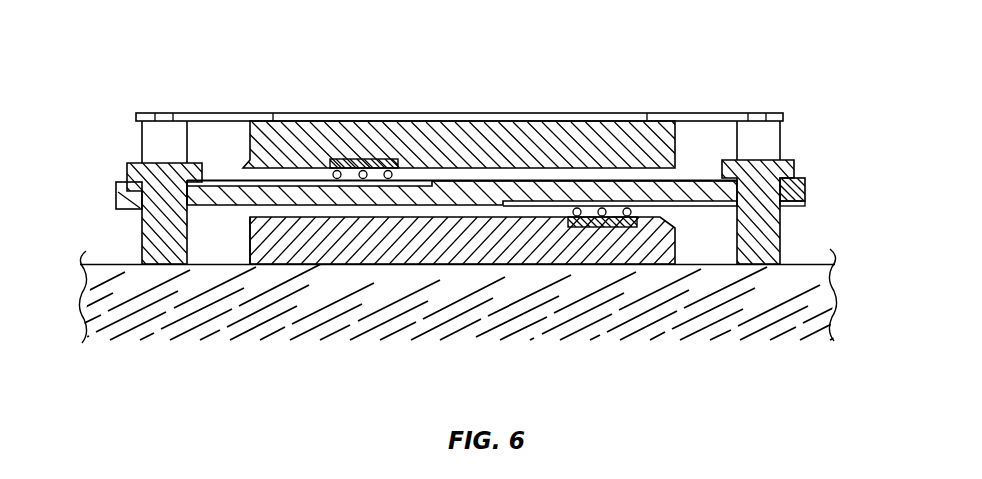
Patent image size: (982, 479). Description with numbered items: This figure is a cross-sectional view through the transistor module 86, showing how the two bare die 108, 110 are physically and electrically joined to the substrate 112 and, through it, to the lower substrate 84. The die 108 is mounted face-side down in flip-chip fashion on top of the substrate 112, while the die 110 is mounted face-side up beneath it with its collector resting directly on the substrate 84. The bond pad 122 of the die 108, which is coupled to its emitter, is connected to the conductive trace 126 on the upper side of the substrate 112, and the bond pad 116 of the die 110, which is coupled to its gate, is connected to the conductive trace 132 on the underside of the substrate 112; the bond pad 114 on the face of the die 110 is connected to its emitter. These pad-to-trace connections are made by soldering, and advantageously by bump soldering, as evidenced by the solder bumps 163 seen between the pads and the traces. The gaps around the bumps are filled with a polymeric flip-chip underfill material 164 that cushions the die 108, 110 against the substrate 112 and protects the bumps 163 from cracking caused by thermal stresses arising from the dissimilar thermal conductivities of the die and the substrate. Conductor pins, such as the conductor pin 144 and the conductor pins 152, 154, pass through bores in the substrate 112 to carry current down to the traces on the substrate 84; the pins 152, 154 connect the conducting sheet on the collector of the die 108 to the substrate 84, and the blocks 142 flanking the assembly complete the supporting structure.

The transistor module 86 is at (496, 79).
The substrate 84 is at (337, 315).
The bare die 108 is at (456, 110).
The bare die 110 is at (455, 297).
The substrate 112 is at (504, 188).
The bond pad 114 is at (255, 297).
The bond pad 116 is at (648, 292).
The bond pad 122 is at (400, 115).
The conductive trace 126 is at (435, 130).
The conductive trace 132 is at (664, 288).
The left support post 142 is at (156, 200).
The conductor pin 144 is at (751, 200).
The conductor pin 152 is at (420, 136).
The conductor pin 154 is at (802, 135).
The solder bumps 163 is at (439, 216).
The flip-chip underfill material 164 is at (502, 231).